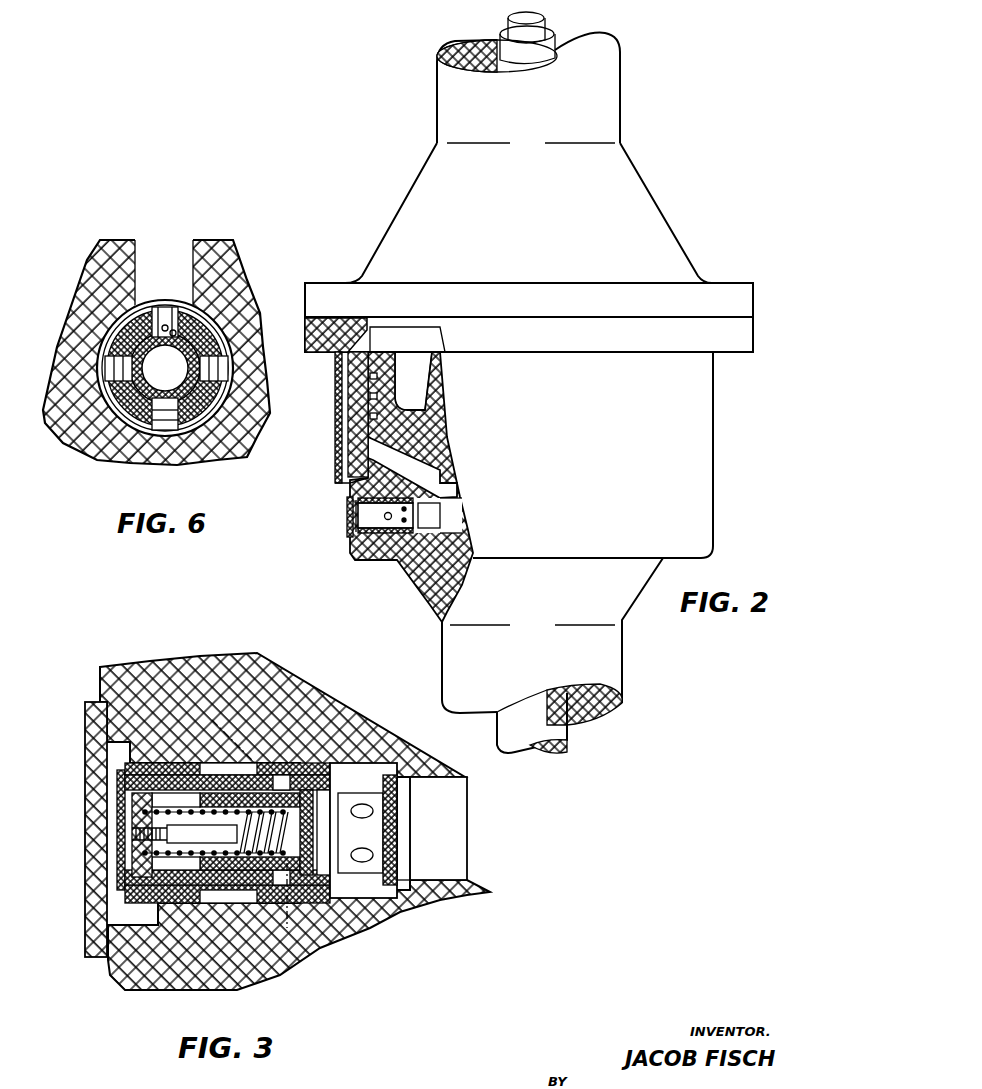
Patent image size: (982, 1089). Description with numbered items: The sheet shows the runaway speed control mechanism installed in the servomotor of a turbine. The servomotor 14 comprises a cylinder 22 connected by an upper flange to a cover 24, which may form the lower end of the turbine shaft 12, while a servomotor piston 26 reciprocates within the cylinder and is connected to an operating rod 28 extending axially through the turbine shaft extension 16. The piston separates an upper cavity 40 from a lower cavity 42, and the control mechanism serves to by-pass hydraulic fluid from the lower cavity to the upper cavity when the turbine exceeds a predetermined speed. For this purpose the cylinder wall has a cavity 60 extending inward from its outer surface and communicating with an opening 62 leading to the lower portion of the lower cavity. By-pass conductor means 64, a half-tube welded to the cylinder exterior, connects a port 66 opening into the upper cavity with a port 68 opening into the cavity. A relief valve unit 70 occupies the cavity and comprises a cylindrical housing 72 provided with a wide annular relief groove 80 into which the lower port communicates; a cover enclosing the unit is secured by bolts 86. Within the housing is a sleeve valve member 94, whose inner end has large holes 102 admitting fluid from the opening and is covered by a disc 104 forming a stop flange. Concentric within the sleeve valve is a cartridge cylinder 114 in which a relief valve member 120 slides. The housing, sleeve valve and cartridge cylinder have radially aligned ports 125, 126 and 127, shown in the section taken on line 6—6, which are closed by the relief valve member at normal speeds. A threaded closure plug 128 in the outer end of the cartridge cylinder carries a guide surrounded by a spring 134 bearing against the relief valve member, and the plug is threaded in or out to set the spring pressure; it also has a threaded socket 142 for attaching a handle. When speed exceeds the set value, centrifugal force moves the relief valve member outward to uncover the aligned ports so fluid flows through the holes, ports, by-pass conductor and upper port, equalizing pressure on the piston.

In FIG. 3, the section line 6— 6 is at (197, 735).
In FIG. 2, the turbine shaft 12 is at (605, 97).
In FIG. 2, the servomotor 14 is at (716, 430).
In FIG. 2, the turbine shaft extension 16 is at (622, 657).
In FIG. 2, the cylinder 22 is at (358, 428).
In FIG. 6, the cylinder 22 is at (118, 258).
In FIG. 3, the cylinder 22 is at (123, 972).
In FIG. 2, the cover 24 is at (640, 235).
In FIG. 2, the servomotor piston 26 is at (385, 405).
In FIG. 2, the operating rod 28 is at (540, 723).
In FIG. 2, the upper cavity 40 is at (410, 372).
In FIG. 2, the lower cavity 42 is at (400, 466).
In FIG. 3, the lower cavity 42 is at (322, 683).
In FIG. 2, the cavity 60 is at (405, 555).
In FIG. 3, the cavity 60 is at (330, 892).
In FIG. 2, the opening 62 is at (430, 522).
In FIG. 3, the opening 62 is at (455, 825).
In FIG. 2, the by-pass conductor means 64 is at (335, 378).
In FIG. 2, the port 66 is at (357, 345).
In FIG. 2, the port 68 is at (360, 482).
In FIG. 6, the port 68 is at (192, 253).
In FIG. 3, the port 68 is at (183, 675).
In FIG. 2, the relief valve unit 70 is at (358, 540).
In FIG. 3, the relief valve unit 70 is at (332, 756).
In FIG. 6, the housing 72 is at (118, 345).
In FIG. 3, the housing 72 is at (175, 892).
In FIG. 6, the annular relief groove 80 is at (118, 325).
In FIG. 3, the annular relief groove 80 is at (302, 770).
In FIG. 3, the bolts 86 is at (95, 745).
In FIG. 6, the sleeve valve member 94 is at (125, 410).
In FIG. 3, the sleeve valve member 94 is at (175, 790).
In FIG. 3, the holes 102 is at (373, 810).
In FIG. 3, the disc 104 is at (375, 850).
In FIG. 6, the cartridge cylinder 114 is at (185, 420).
In FIG. 3, the cartridge cylinder 114 is at (190, 795).
In FIG. 6, the relief valve member 120 is at (145, 420).
In FIG. 3, the relief valve member 120 is at (213, 890).
In FIG. 6, the port 125 is at (158, 322).
In FIG. 6, the port 126 is at (165, 325).
In FIG. 6, the port 127 is at (174, 330).
In FIG. 3, the closure plug 128 is at (135, 805).
In FIG. 3, the spring 134 is at (253, 880).
In FIG. 3, the threaded socket 142 is at (133, 833).